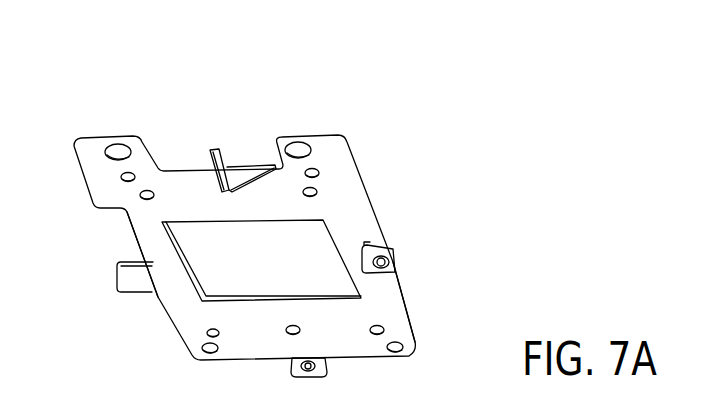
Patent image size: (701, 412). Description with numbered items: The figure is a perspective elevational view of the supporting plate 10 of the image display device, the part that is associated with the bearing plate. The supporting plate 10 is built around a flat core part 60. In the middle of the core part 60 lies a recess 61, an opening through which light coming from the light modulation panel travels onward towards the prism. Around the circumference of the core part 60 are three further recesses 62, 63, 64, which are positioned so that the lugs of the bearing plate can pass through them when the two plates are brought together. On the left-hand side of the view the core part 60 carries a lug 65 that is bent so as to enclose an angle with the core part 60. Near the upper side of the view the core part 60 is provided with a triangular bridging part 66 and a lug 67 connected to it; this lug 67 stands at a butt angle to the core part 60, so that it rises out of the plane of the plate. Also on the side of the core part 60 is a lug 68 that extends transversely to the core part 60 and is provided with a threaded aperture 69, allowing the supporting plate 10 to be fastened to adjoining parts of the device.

The supporting plate 10 is at (284, 106).
The core part 60 is at (93, 171).
The recess 61 is at (192, 232).
The recess 62 is at (128, 231).
The recess 63 is at (256, 152).
The recess 64 is at (400, 290).
The lug 65 is at (118, 278).
The triangular bridging part 66 is at (242, 177).
The lug 67 is at (222, 151).
The lug 68 is at (386, 270).
The threaded aperture 69 is at (389, 258).